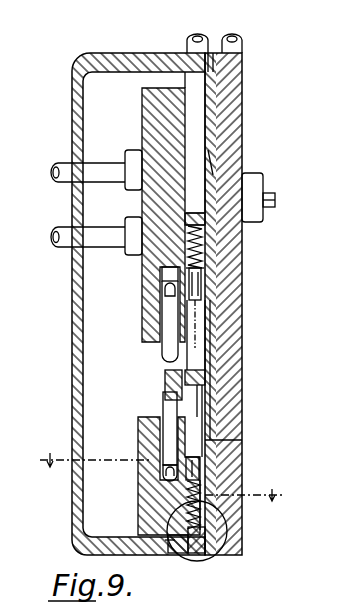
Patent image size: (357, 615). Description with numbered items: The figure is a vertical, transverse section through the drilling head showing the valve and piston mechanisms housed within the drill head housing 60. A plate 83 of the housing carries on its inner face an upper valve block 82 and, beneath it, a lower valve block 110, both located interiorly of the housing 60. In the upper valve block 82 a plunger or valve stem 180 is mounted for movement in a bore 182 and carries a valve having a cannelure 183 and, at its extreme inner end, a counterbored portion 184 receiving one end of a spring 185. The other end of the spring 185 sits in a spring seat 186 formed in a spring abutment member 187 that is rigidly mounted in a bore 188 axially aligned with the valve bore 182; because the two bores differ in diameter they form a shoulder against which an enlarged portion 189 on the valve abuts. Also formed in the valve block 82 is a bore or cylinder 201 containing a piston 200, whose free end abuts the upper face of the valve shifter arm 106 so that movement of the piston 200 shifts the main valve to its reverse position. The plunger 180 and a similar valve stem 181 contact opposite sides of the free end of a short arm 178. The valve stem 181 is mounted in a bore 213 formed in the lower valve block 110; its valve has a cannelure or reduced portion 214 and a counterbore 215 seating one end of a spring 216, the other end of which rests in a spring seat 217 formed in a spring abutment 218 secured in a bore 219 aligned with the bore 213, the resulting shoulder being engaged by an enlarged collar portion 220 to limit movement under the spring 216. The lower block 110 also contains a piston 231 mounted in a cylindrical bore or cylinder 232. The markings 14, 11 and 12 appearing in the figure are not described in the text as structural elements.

The drill head housing 60 is at (78, 100).
The valve block 82 is at (144, 107).
The plate 83 is at (240, 82).
The spring abutment member 187 is at (197, 143).
The bore 188 is at (213, 175).
The flow direction 14 is at (193, 208).
The spring seat 186 is at (206, 236).
The spring 185 is at (203, 248).
The counterbored portion 184 is at (203, 257).
The bore 182 is at (202, 288).
The cannelure 183 is at (202, 298).
The enlarged portion 189 is at (162, 252).
The bore or cylinder 201 is at (162, 280).
The piston 200 is at (165, 352).
The plunger or valve stem 180 is at (205, 356).
The flow direction 11 is at (195, 340).
The short arm 178 is at (206, 378).
The arm 106 is at (166, 386).
The valve stem 181 is at (210, 406).
The valve block 110 is at (142, 506).
The piston 231 is at (170, 437).
The cylindrical bore or cylinder 232 is at (165, 478).
The section line 12 is at (161, 470).
The cannelure or reduced portion 214 is at (212, 440).
The bore 213 is at (200, 465).
The counterbore 215 is at (201, 505).
The enlarged collar portion 220 is at (205, 520).
The spring 216 is at (190, 533).
The spring abutment 218 is at (190, 552).
The spring seat 217 is at (218, 557).
The bore 219 is at (165, 548).